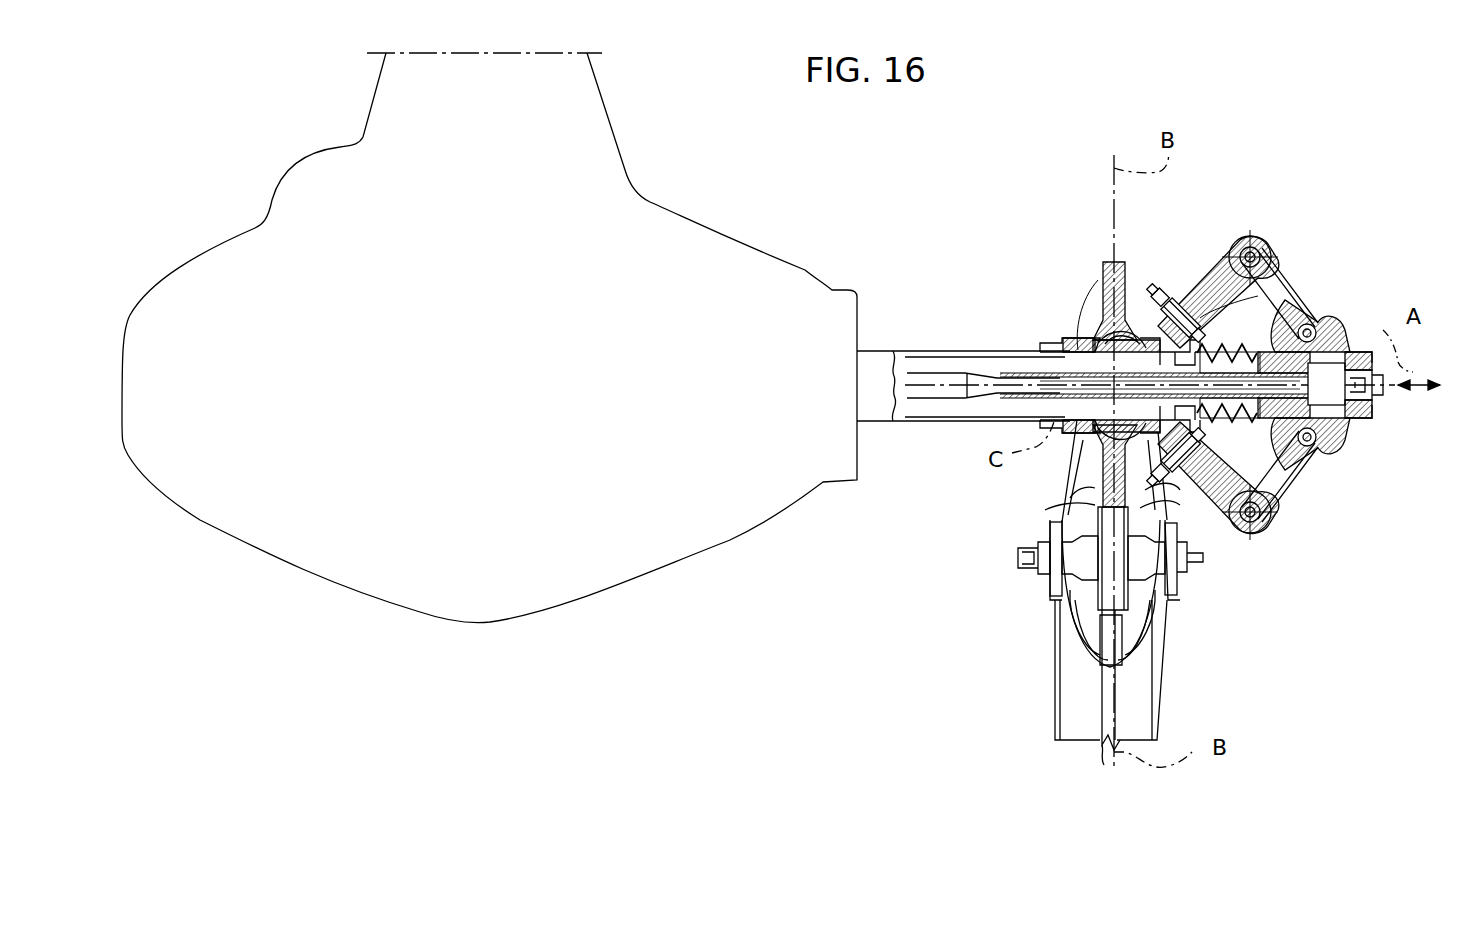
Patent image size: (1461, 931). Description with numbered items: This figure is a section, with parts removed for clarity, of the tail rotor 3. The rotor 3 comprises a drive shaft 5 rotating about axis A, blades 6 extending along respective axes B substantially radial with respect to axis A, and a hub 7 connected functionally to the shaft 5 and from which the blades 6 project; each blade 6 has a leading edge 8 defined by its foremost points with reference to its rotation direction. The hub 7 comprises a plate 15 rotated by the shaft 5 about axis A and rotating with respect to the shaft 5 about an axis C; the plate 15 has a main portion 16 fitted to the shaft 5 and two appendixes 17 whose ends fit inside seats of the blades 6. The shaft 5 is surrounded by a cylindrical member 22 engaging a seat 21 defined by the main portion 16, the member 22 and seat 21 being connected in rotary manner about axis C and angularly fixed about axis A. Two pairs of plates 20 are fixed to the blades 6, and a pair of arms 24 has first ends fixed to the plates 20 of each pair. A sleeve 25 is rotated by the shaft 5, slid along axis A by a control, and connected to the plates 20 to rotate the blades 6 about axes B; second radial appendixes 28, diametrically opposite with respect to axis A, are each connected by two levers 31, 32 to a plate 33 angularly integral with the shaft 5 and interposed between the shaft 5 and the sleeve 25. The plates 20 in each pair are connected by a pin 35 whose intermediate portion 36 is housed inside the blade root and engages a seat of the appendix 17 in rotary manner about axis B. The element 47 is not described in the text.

The rotor 3 is at (1271, 326).
The drive shaft 5 is at (935, 351).
The blades 6 is at (1110, 632).
The hub 7 is at (1358, 292).
The leading edge 8 is at (1100, 698).
The plate 15 is at (1070, 262).
The main portion 16 is at (1108, 268).
The appendixes 17 is at (1110, 630).
The plates 20 is at (1057, 585).
The seat 21 is at (1140, 345).
The cylindrical member 22 is at (1108, 352).
The arms 24 is at (1062, 500).
The sleeve 25 is at (1345, 362).
The second radial appendixes 28 is at (1322, 338).
The lever 31 is at (1272, 262).
The lever 32 is at (1222, 292).
The plate 33 is at (1118, 462).
The pin 35 is at (1022, 593).
The intermediate portion 36 is at (1022, 553).
The guide surface 47 is at (1090, 670).